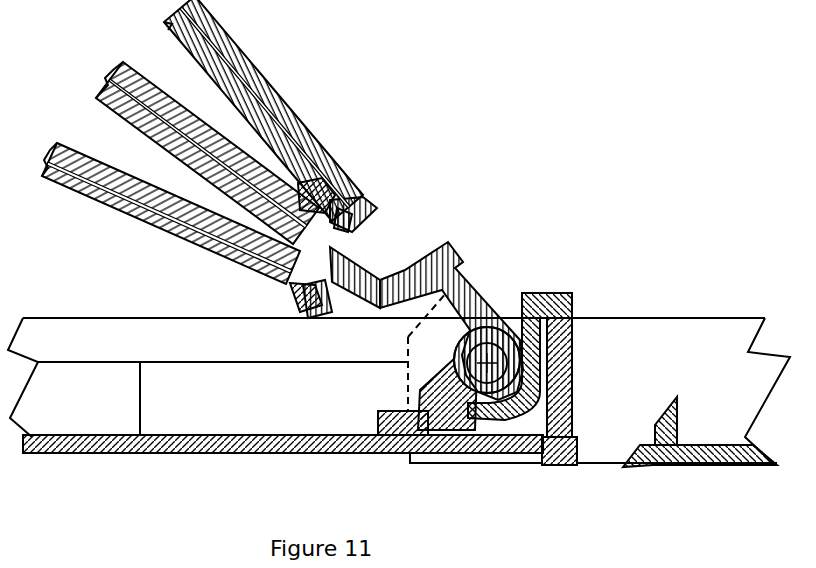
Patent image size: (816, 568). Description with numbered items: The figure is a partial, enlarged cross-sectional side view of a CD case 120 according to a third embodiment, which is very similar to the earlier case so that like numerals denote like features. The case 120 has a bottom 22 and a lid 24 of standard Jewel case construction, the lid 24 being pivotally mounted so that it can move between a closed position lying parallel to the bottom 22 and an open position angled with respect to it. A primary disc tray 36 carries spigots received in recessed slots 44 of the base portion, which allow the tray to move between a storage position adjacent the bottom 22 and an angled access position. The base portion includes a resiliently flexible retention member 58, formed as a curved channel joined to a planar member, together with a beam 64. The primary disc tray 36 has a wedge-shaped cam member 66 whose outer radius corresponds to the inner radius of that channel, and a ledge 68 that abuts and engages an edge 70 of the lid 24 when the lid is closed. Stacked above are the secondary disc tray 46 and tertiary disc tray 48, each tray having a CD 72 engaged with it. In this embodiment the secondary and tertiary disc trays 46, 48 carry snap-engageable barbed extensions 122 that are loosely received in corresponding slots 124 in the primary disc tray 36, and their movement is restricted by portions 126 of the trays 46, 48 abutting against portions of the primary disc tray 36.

The bottom 22 is at (243, 435).
The lid 24 is at (690, 465).
The primary disc tray 36 is at (470, 282).
The recessed slots 44 is at (473, 327).
The secondary disc tray 46 is at (150, 120).
The tertiary disc tray 48 is at (76, 182).
The retention member 58 is at (544, 465).
The beam 64 is at (402, 411).
The cam member 66 is at (474, 440).
The ledge 68 is at (442, 242).
The edge 70 is at (640, 455).
The CD 72 is at (268, 78).
The case 120 is at (497, 136).
The barbed extensions 122 is at (360, 236).
The slots 124 is at (307, 190).
The portions 126 is at (352, 248).